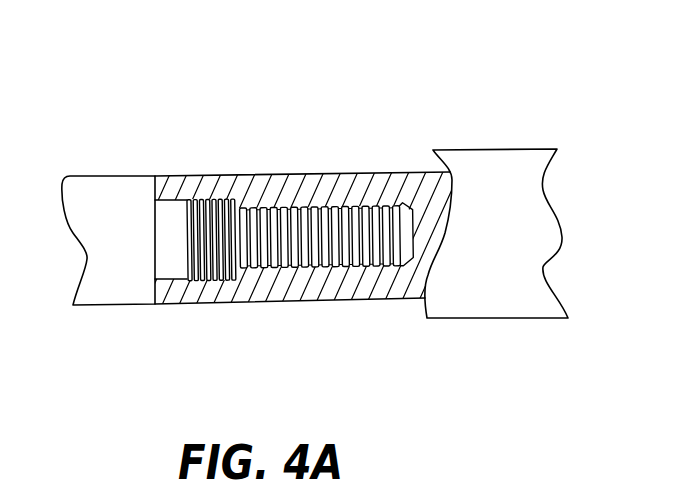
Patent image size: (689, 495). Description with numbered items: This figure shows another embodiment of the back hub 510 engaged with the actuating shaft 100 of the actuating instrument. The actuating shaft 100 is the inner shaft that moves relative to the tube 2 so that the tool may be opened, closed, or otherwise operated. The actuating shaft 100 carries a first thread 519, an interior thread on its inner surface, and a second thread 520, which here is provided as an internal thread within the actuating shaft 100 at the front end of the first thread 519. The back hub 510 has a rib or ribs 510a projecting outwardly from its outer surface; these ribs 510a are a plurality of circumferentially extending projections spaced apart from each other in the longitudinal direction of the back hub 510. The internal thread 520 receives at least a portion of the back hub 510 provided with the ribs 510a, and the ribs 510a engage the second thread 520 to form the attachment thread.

The tube 2 is at (475, 150).
The actuating shaft 100 is at (387, 180).
The back hub 510 is at (85, 175).
The ribs 510a is at (185, 176).
The first thread 519 is at (293, 207).
The second thread 520 is at (208, 177).